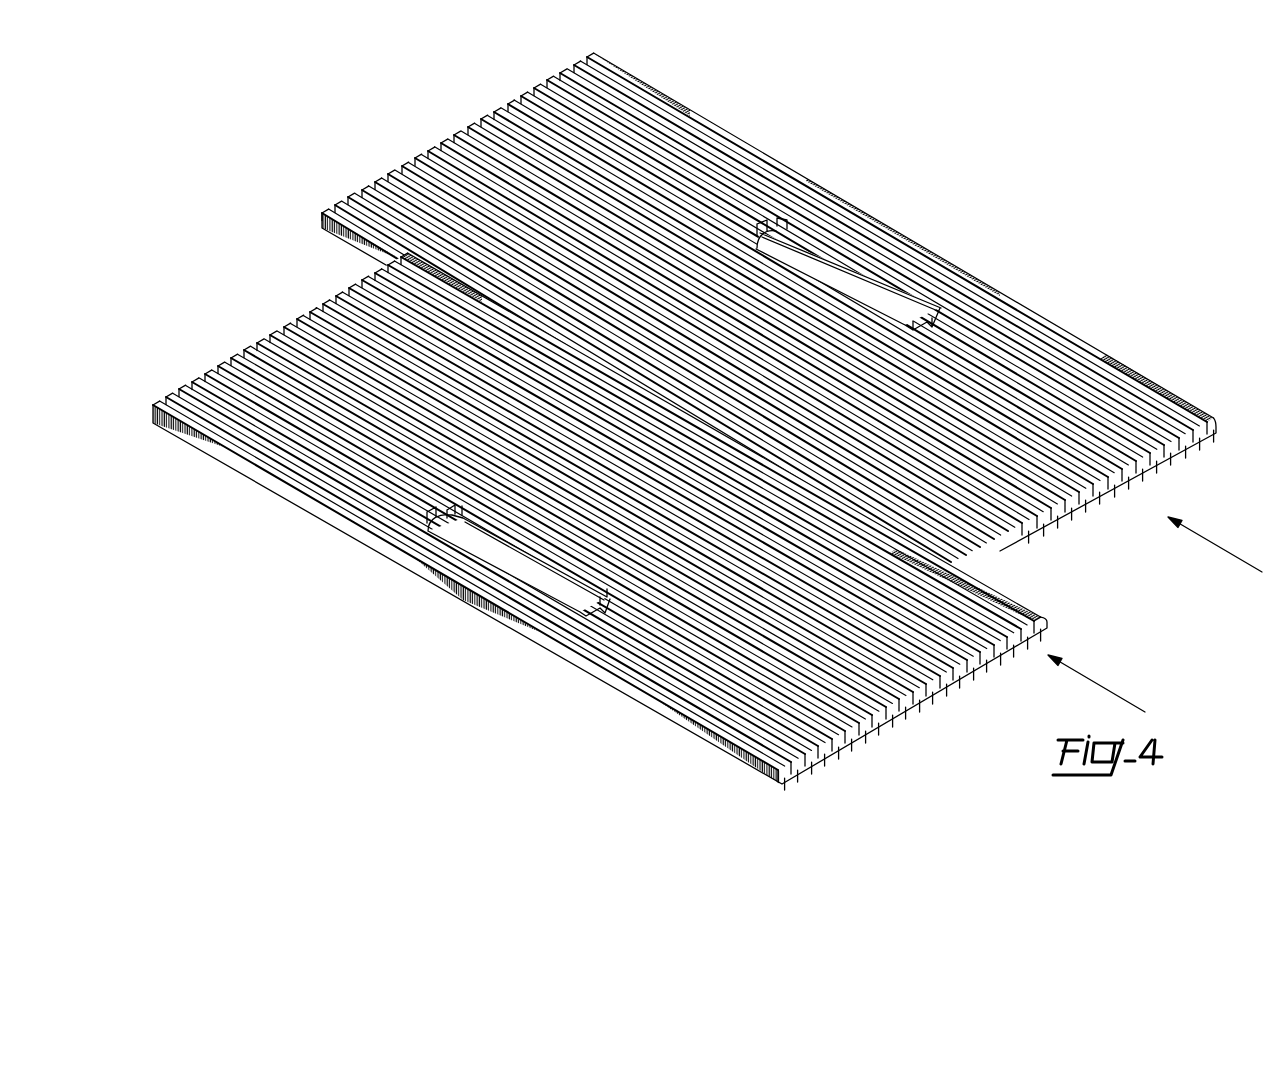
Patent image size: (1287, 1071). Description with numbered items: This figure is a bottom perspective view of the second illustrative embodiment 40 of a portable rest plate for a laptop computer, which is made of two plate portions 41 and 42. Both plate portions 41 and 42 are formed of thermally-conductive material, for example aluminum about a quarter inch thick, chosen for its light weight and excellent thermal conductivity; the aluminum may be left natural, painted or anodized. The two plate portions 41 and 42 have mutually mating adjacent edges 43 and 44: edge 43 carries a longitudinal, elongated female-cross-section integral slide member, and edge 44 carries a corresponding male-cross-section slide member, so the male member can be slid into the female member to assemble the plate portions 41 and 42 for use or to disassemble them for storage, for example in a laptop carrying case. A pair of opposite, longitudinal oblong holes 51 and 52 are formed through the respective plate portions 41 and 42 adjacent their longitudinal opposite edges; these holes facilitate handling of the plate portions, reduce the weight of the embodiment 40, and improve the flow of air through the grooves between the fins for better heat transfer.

The second illustrative embodiment 40 is at (1096, 584).
The plate portion 41 is at (254, 489).
The plate portion 42 is at (733, 124).
The edge 43 is at (1050, 612).
The edge 44 is at (345, 229).
The oblong hole 51 is at (500, 556).
The oblong hole 52 is at (847, 272).